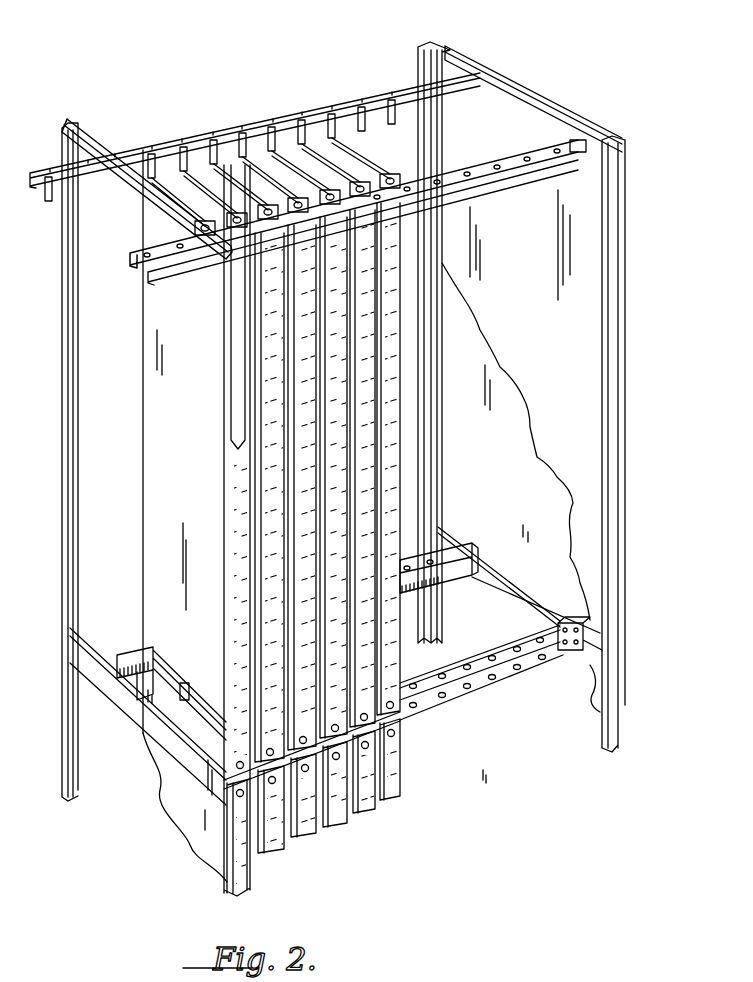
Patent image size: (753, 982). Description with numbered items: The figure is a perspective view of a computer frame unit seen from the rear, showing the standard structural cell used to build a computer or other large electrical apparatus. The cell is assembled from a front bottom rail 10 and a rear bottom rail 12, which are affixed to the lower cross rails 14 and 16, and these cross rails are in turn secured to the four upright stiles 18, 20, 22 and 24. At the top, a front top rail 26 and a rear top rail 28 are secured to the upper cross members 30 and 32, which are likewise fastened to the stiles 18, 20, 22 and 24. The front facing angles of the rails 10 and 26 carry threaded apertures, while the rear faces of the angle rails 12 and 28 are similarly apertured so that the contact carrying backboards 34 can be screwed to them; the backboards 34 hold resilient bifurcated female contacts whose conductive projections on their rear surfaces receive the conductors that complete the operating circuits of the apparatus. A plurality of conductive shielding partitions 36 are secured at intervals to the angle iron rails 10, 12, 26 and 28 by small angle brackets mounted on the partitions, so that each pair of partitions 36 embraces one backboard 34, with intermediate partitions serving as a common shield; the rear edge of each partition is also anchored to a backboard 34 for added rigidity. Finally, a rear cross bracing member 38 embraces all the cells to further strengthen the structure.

The front bottom rail 10 is at (455, 553).
The rear bottom rail 12 is at (463, 658).
The cross rail 14 is at (138, 720).
The cross rail 16 is at (530, 600).
The stile 18 is at (62, 531).
The stile 20 is at (232, 378).
The stile 22 is at (610, 722).
The stile 24 is at (438, 412).
The front top rail 26 is at (360, 101).
The rear top rail 28 is at (457, 163).
The upper cross member 30 is at (553, 114).
The upper cross member 32 is at (84, 131).
The backboard 34 is at (243, 495).
The shielding partition 36 is at (343, 173).
The rear cross bracing member 38 is at (490, 191).